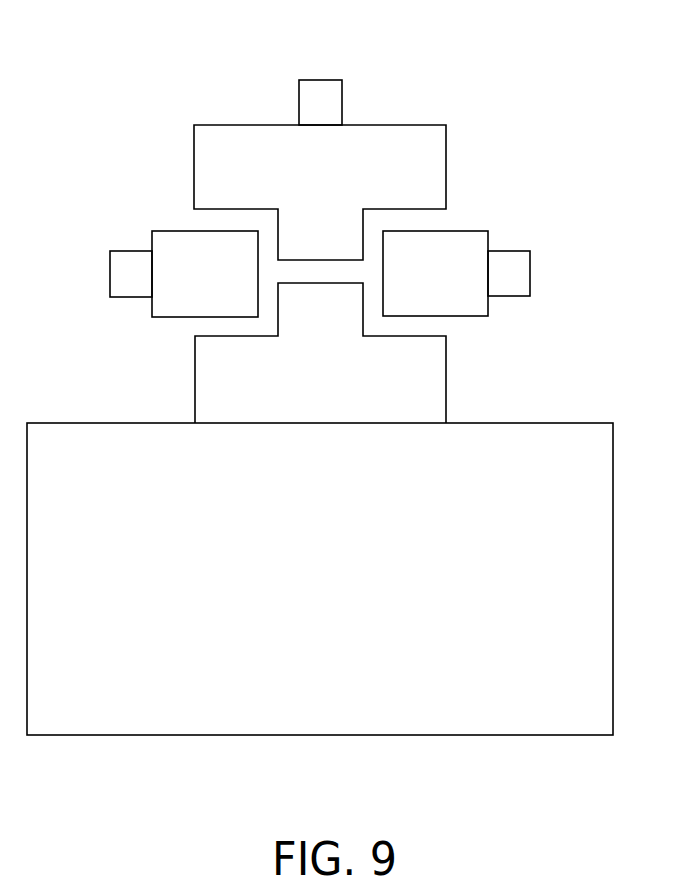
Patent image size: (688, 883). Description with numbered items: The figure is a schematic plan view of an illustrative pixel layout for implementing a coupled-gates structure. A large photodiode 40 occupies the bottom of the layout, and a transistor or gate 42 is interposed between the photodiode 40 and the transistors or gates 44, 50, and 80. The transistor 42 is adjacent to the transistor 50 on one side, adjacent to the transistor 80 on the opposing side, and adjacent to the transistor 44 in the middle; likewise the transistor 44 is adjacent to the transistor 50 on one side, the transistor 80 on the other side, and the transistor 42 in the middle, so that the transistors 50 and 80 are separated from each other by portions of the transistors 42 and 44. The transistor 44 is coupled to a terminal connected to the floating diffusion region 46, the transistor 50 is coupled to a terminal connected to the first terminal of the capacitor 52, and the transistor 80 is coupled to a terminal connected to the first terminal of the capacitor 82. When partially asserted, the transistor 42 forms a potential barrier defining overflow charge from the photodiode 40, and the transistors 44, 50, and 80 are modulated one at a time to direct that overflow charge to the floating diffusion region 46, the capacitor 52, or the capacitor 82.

The photodiode 40 is at (316, 561).
The transistor 42 is at (323, 391).
The transistor 44 is at (328, 198).
The floating diffusion region 46 is at (324, 66).
The transistor 50 is at (216, 293).
The capacitor 52 is at (121, 229).
The transistor 80 is at (440, 287).
The capacitor 82 is at (521, 229).